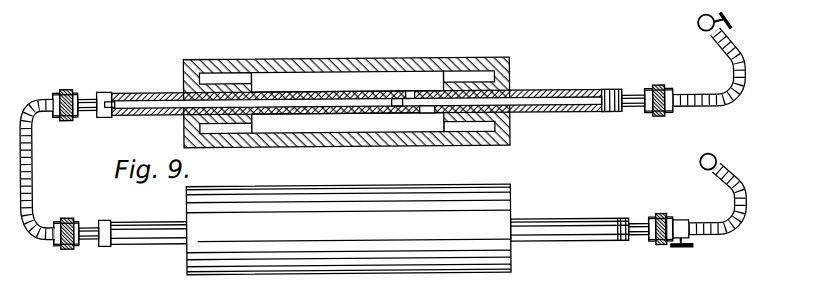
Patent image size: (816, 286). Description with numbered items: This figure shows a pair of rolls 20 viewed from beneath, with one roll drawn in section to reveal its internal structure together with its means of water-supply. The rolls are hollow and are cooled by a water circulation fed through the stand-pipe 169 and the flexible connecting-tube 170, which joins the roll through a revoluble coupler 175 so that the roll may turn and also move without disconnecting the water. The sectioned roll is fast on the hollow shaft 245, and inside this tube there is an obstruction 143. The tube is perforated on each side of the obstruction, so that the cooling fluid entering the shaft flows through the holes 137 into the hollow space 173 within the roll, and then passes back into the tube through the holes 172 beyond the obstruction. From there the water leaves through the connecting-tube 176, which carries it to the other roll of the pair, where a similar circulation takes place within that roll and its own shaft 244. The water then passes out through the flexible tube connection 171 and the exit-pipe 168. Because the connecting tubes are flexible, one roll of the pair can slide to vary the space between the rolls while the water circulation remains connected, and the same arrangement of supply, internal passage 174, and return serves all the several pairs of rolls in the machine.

The roll 20 is at (330, 54).
The holes 137 is at (409, 95).
The obstruction 143 is at (394, 108).
The exit-pipe 168 is at (722, 158).
The stand-pipe 169 is at (701, 21).
The connecting-tube 170 is at (733, 70).
The flexible tube connection 171 is at (736, 207).
The holes 172 is at (259, 94).
The hollow space 173 is at (347, 102).
The bore 174 is at (355, 104).
The revoluble coupler 175 is at (68, 84).
The connecting-tube 176 is at (45, 169).
The piston rod 244 is at (363, 223).
The hollow shaft 245 is at (358, 96).